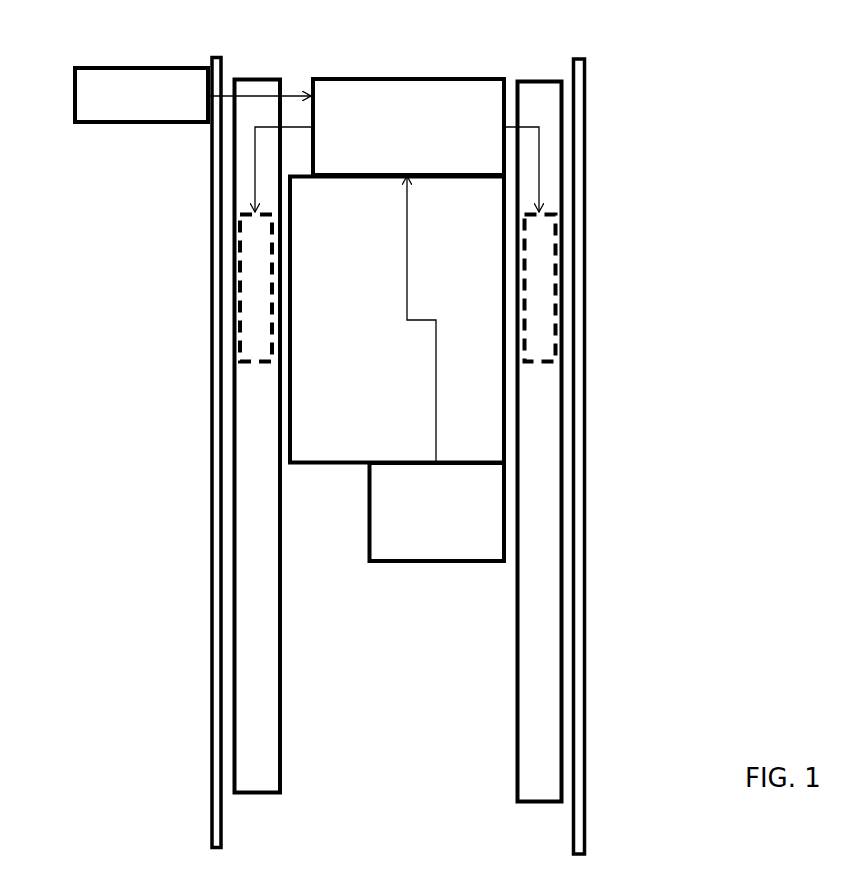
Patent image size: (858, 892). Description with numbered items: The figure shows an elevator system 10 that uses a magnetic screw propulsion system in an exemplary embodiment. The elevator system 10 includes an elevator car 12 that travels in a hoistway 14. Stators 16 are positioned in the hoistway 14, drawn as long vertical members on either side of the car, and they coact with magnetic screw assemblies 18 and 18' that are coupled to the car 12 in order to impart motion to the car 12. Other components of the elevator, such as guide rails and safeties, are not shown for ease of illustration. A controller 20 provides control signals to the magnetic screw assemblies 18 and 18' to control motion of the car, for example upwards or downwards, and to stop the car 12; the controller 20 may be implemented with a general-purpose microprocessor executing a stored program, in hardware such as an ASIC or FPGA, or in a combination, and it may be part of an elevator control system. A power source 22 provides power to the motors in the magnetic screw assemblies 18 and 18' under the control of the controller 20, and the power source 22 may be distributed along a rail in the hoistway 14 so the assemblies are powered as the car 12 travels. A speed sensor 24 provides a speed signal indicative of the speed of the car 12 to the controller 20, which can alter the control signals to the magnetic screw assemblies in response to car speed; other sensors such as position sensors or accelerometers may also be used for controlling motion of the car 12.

The elevator system 10 is at (706, 96).
The elevator car 12 is at (397, 320).
The hoistway 14 is at (586, 133).
The stator 16 is at (249, 673).
The magnetic screw assembly 18 is at (193, 368).
The magnetic screw assembly 18' is at (618, 300).
The controller 20 is at (415, 78).
The power source 22 is at (195, 123).
The speed sensor 24 is at (475, 555).